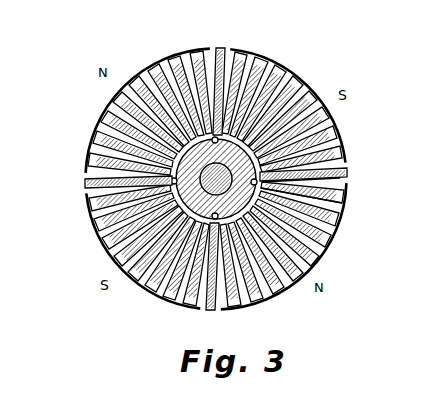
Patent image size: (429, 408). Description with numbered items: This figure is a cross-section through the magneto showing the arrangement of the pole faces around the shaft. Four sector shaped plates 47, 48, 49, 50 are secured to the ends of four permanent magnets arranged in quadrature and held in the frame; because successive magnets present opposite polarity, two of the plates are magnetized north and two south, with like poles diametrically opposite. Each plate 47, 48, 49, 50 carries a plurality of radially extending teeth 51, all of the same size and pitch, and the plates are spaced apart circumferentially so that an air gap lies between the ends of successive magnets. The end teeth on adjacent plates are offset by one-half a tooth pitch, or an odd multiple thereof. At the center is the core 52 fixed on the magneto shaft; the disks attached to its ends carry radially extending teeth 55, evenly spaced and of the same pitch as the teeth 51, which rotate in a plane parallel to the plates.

The sector shaped plate 47 is at (147, 80).
The sector shaped plate 48 is at (310, 81).
The sector shaped plate 49 is at (330, 247).
The sector shaped plate 50 is at (105, 238).
The radially extending teeth 51 is at (173, 52).
The core 52 is at (337, 184).
The radially extending teeth 55 is at (263, 68).